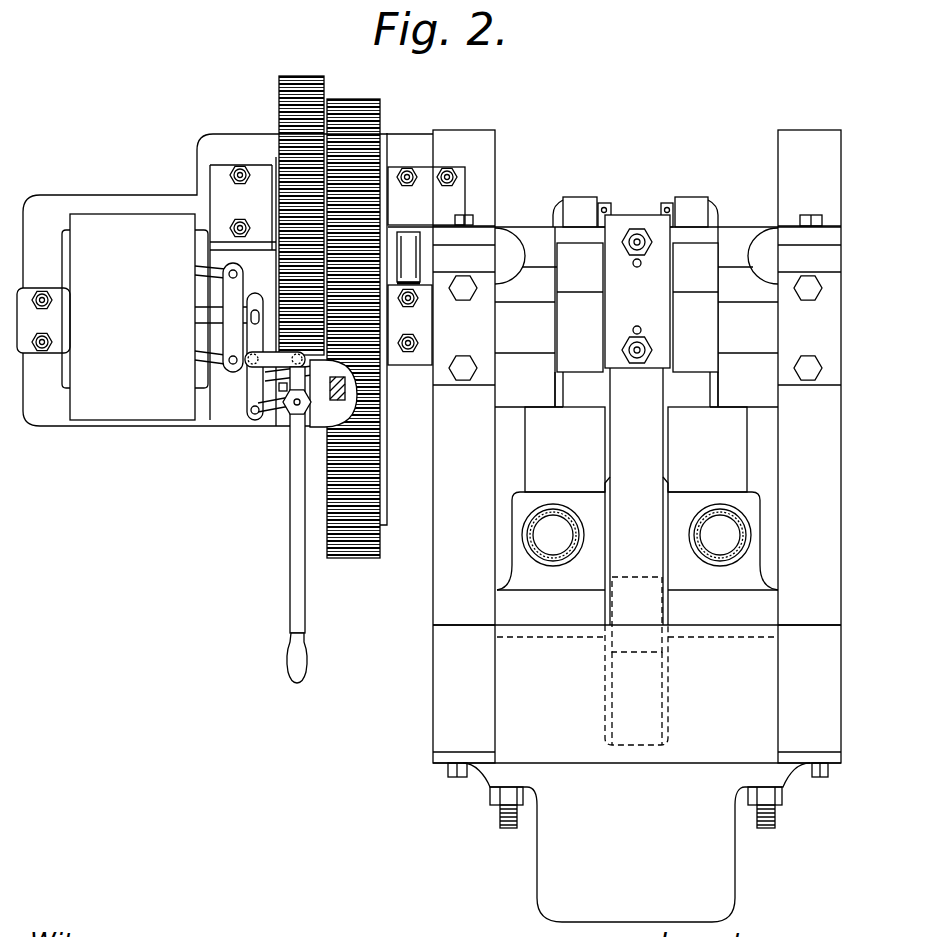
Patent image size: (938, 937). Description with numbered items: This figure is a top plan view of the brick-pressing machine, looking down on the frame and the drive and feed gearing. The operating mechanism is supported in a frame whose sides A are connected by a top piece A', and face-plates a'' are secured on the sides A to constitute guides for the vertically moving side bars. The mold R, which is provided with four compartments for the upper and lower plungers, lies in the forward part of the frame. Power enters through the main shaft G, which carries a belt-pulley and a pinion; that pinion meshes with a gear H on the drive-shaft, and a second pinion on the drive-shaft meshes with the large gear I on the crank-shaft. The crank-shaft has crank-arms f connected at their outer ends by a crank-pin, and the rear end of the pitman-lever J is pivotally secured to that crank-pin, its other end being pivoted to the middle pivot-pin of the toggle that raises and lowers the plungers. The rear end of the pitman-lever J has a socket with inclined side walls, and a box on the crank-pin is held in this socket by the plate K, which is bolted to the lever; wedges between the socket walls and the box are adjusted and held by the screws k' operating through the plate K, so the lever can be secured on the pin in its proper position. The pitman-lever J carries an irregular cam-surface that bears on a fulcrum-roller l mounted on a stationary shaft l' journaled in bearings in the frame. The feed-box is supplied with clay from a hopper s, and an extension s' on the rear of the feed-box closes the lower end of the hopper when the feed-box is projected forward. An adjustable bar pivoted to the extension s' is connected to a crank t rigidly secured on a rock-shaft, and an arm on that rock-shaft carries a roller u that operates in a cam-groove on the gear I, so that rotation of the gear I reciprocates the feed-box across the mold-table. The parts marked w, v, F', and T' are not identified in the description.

The gear H is at (296, 88).
The large gear I is at (352, 108).
The main shaft G is at (200, 306).
The pitman-lever J is at (369, 419).
The bolt plate w is at (425, 196).
The stop block v is at (407, 258).
The roller u is at (408, 257).
The crank t is at (534, 227).
The plate K is at (620, 227).
The screws k' is at (634, 296).
The side block F' is at (636, 317).
The crank-arms f is at (637, 307).
The stem T' is at (633, 389).
The extension s' is at (636, 449).
The hopper s is at (637, 541).
The stationary shaft l' is at (637, 605).
The fulcrum-roller l is at (615, 661).
The sides A is at (610, 446).
The top piece A' is at (637, 694).
The mold R is at (636, 842).
The face-plates a'' is at (613, 788).